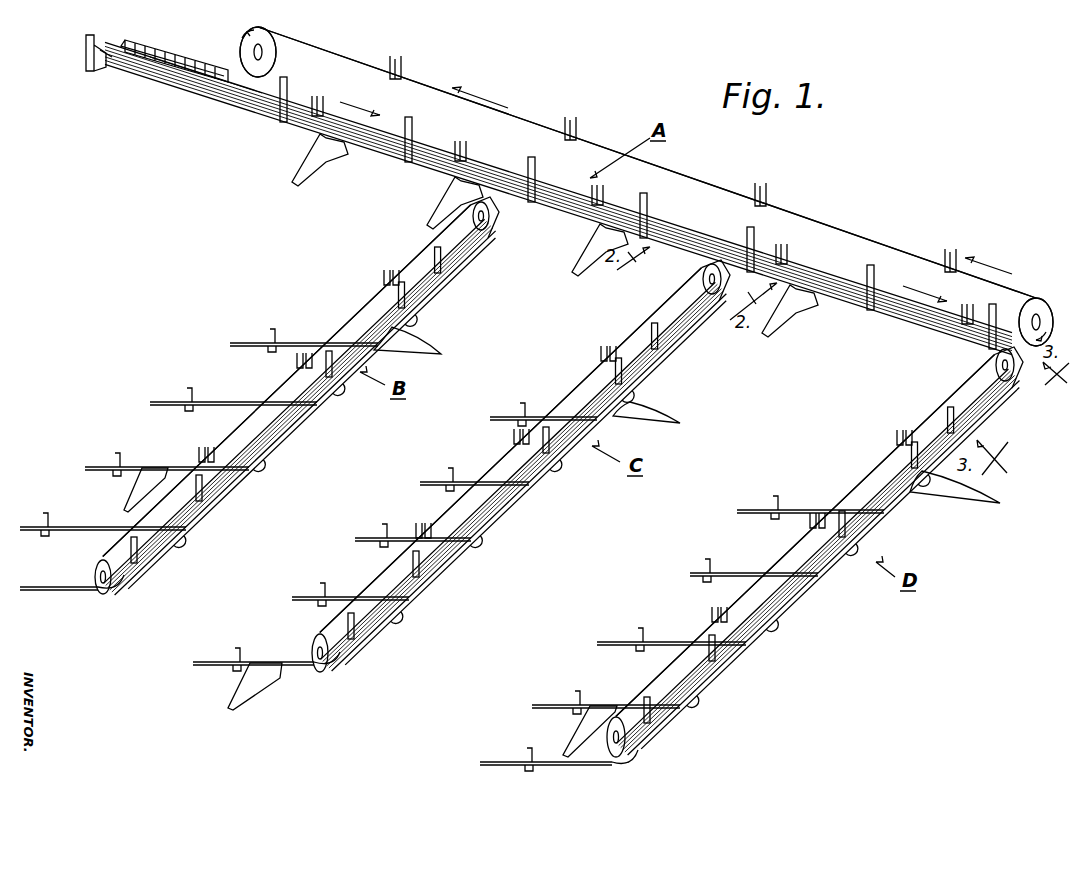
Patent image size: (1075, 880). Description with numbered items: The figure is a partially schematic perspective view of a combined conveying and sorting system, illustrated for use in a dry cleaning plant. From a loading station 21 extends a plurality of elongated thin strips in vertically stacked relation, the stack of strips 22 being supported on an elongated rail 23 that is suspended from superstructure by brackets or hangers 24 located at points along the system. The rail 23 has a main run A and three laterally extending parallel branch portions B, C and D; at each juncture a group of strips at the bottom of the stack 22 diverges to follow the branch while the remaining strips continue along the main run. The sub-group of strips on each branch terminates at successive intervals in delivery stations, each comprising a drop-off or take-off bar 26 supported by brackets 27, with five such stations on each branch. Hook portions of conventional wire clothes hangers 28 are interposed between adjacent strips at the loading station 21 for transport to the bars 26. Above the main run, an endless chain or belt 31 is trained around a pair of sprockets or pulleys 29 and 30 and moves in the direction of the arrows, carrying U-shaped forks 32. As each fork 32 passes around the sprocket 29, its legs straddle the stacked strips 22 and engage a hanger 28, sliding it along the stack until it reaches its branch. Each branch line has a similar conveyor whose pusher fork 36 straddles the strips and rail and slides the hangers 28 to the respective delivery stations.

The loading station 21 is at (130, 84).
The stack of strips 22 is at (255, 100).
The rail 23 is at (210, 92).
The brackets or hangers 24 is at (86, 50).
The drop-off or take-off bar 26 is at (190, 402).
The brackets 27 is at (274, 332).
The wire clothes hangers 28 is at (340, 182).
The sprocket or pulley 29 is at (268, 40).
The sprocket or pulley 30 is at (1040, 298).
The endless chain or belt 31 is at (870, 232).
The U-shaped forks 32 is at (320, 98).
The pusher fork 36 is at (385, 278).